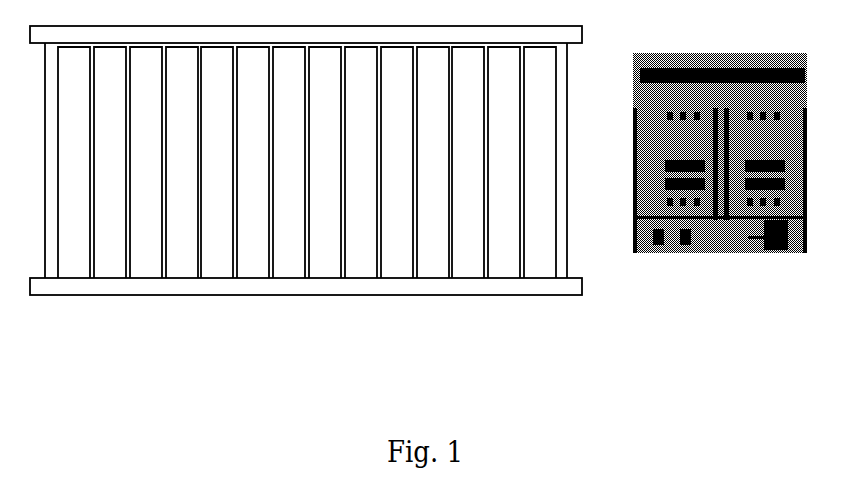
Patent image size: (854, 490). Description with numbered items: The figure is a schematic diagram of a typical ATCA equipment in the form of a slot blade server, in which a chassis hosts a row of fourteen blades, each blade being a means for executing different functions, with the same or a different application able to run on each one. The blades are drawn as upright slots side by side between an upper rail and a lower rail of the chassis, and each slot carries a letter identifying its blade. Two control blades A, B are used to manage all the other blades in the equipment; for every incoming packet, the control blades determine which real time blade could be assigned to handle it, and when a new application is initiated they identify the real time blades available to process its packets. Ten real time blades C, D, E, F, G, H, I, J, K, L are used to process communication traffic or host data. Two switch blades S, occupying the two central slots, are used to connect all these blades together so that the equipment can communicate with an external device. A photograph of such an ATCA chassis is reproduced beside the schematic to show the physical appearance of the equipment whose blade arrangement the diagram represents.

The control blade A is at (74, 162).
The real time blade C is at (110, 162).
The real time blade E is at (146, 162).
The real time blade G is at (182, 162).
The real time blade I is at (217, 162).
The real time blade K is at (253, 162).
The switch blade S is at (307, 162).
The control blade B is at (361, 162).
The real time blade D is at (397, 162).
The real time blade F is at (433, 162).
The real time blade H is at (468, 162).
The real time blade J is at (504, 162).
The real time blade L is at (540, 162).